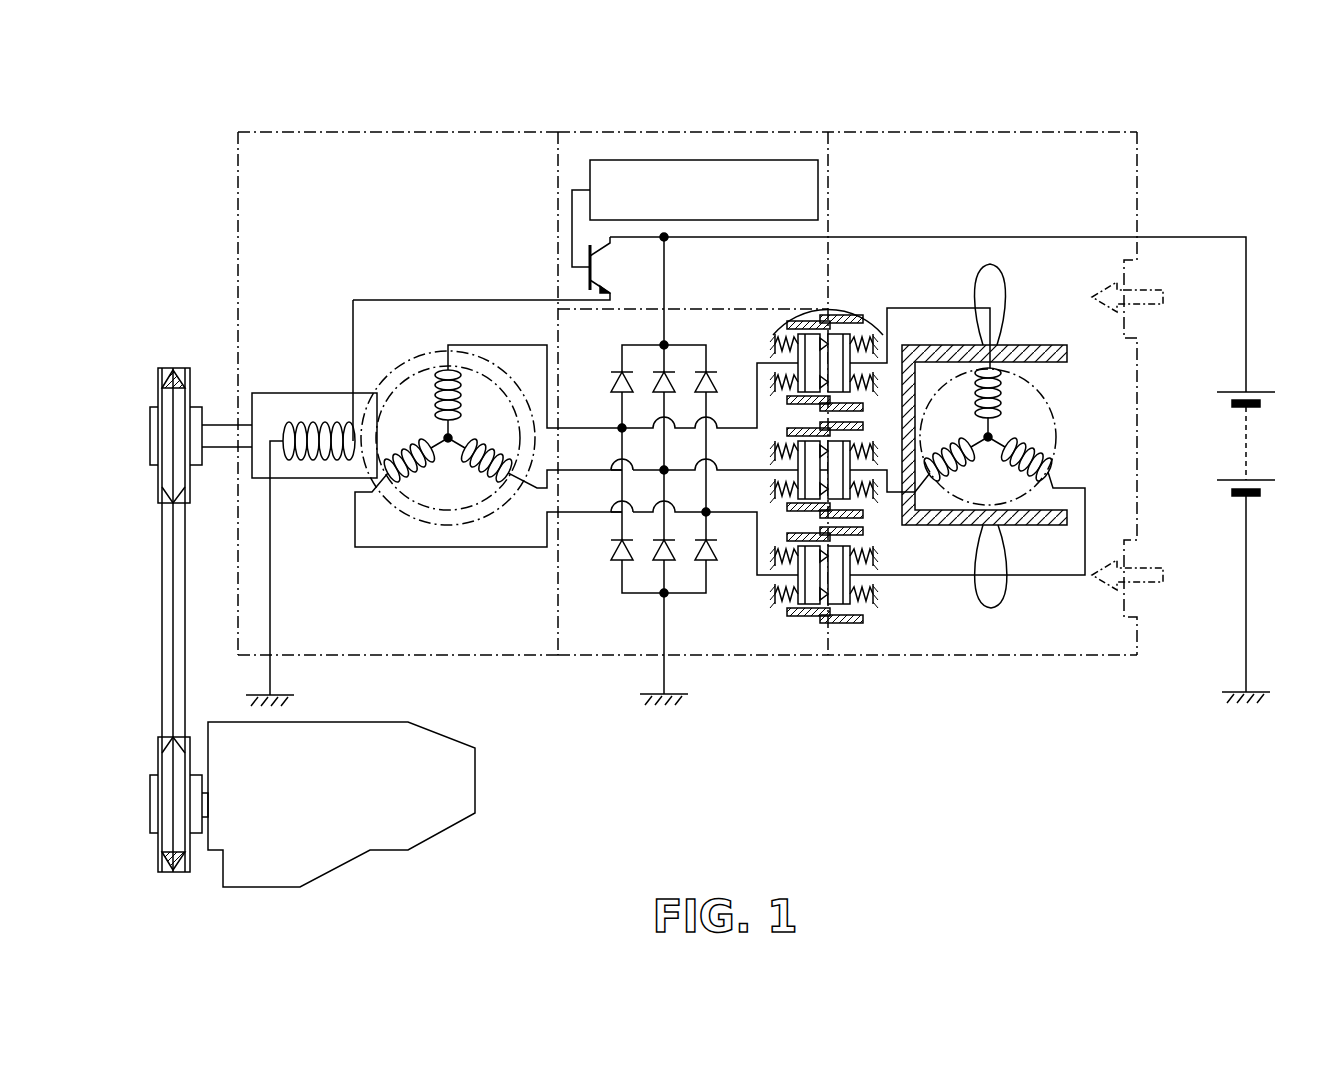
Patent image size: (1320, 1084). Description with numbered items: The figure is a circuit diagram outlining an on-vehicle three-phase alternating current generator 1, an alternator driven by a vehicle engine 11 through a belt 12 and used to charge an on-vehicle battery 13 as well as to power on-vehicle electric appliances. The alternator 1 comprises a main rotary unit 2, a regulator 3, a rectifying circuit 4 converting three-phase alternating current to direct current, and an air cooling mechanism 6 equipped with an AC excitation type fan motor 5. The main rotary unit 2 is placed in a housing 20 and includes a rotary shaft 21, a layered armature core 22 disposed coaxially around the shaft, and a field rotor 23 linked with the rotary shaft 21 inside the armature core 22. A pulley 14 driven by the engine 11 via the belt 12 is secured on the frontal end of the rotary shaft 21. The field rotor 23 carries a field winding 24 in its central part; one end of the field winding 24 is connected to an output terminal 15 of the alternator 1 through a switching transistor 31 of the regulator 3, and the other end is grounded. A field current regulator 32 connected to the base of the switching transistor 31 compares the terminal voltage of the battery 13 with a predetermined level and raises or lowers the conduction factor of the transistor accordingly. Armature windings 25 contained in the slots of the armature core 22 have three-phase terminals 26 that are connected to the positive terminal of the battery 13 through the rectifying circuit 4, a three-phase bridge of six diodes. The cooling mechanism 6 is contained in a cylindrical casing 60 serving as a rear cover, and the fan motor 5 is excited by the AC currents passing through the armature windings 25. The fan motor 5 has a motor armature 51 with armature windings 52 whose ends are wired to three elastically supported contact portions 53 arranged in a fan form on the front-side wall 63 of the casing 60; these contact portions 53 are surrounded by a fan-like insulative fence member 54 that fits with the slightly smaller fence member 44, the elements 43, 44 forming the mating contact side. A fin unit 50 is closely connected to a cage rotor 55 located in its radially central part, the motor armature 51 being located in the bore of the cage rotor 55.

The on-vehicle three-phase alternating current generator 1 is at (1139, 142).
The main rotary unit 2 is at (466, 131).
The regulator 3 is at (715, 158).
The rectifying circuit 4 is at (697, 613).
The fan motor 5 is at (1014, 618).
The air cooling mechanism 6 is at (1072, 656).
The vehicle engine 11 is at (455, 778).
The belt 12 is at (182, 675).
The on-vehicle battery 13 is at (1262, 392).
The pulley 14 is at (193, 388).
The output terminal 15 is at (666, 241).
The housing 20 is at (357, 132).
The rotary shaft 21 is at (222, 441).
The armature core 22 is at (412, 365).
The field rotor 23 is at (315, 393).
The field winding 24 is at (308, 461).
The armature windings 25 is at (418, 500).
The three-phase terminals 26 is at (621, 427).
The switching transistor 31 is at (593, 272).
The field current regulator 32 is at (660, 160).
The brush holder 43 is at (781, 325).
The fan-like insulative fence member 44 is at (806, 322).
The fin unit 50 is at (970, 594).
The motor armature 51 is at (1050, 388).
The armature windings 52 is at (1050, 437).
The elastically supported contact portions 53 is at (878, 331).
The fan-like insulative fence member 54 is at (845, 320).
The cage rotor 55 is at (1035, 345).
The cylindrical casing 60 is at (1043, 131).
The front-side wall 63 is at (838, 165).